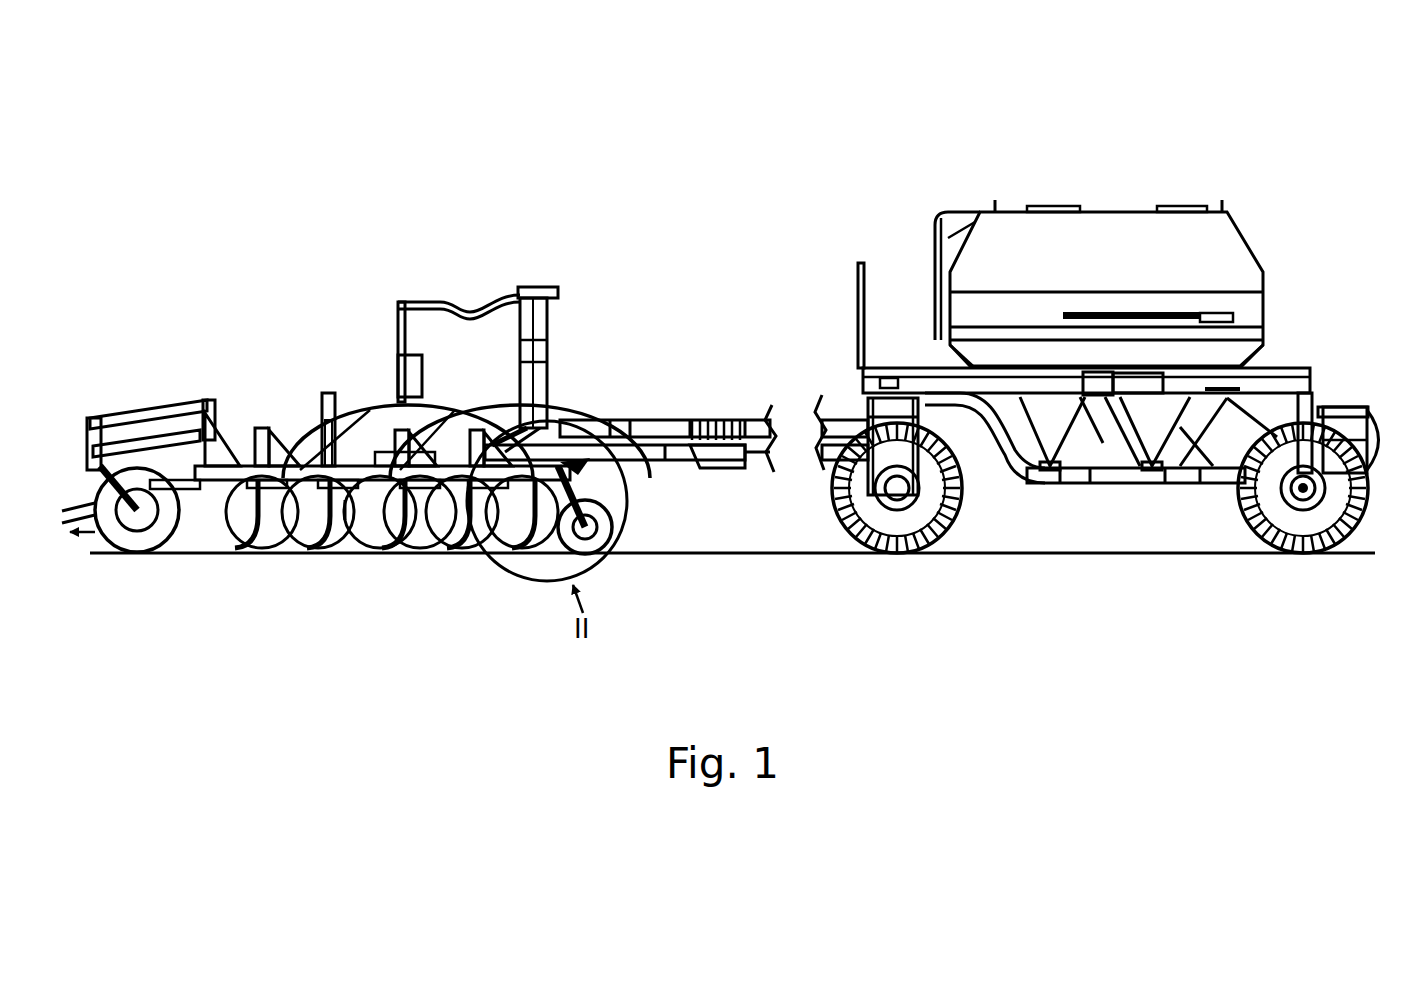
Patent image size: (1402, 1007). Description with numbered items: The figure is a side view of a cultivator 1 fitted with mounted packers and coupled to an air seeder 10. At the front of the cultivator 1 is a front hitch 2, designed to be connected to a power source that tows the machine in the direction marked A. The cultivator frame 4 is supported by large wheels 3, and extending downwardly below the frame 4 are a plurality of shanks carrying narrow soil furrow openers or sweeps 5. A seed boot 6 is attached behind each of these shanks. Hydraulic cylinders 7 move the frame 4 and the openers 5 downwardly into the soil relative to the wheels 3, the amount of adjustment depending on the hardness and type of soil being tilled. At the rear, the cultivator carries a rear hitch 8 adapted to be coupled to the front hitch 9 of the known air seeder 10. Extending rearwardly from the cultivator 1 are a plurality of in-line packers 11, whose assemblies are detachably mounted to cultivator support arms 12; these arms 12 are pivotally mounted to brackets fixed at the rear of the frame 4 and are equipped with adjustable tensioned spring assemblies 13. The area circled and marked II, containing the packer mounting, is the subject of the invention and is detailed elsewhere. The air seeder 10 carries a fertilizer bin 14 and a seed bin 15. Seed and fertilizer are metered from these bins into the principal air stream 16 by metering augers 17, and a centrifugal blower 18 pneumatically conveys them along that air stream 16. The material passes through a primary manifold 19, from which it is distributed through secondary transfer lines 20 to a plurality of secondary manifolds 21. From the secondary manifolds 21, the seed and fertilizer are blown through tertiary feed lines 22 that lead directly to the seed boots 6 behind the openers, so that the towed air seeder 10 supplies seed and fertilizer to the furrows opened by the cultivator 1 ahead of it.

The cultivator 1 is at (270, 353).
The front hitch 2 is at (73, 500).
The wheels 3 is at (130, 547).
The cultivator frame 4 is at (295, 477).
The narrow soil furrow openers or sweeps 5 is at (247, 527).
The seed boots 6 is at (333, 547).
The hydraulic cylinders 7 is at (320, 390).
The rear hitch 8 is at (638, 458).
The front hitch 9 is at (767, 470).
The air seeder 10 is at (1120, 192).
The in-line packers 11 is at (620, 533).
The cultivator support arms 12 is at (630, 483).
The adjustable tensioned spring assemblies 13 is at (547, 433).
The fertilizer bin 14 is at (1023, 430).
The seed bin 15 is at (1203, 487).
The principal air stream 16 is at (657, 420).
The metering augers 17 is at (1057, 490).
The centrifugal blower 18 is at (1350, 407).
The primary manifold 19 is at (557, 290).
The secondary transfer lines 20 is at (463, 312).
The secondary manifolds 21 is at (400, 403).
The tertiary feed lines 22 is at (487, 417).